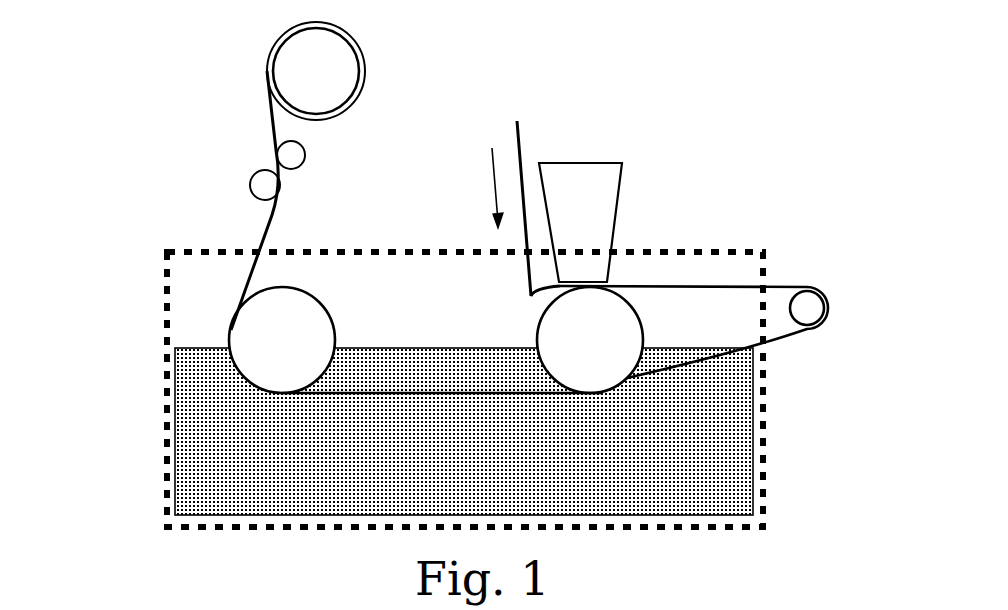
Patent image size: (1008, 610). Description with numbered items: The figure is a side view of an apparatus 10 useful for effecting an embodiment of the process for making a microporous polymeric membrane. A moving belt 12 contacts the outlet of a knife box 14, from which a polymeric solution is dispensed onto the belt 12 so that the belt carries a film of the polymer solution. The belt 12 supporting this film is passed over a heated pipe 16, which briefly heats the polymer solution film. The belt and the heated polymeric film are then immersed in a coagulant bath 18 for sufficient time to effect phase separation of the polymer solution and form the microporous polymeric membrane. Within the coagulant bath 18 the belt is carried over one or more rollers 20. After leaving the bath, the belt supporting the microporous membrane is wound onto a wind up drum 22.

The apparatus 10 is at (147, 228).
The moving belt 12 is at (520, 141).
The knife box 14 is at (593, 232).
The heated pipe 16 is at (802, 313).
The coagulant bath 18 is at (715, 435).
The rollers 20 is at (583, 357).
The wind up drum 22 is at (333, 60).